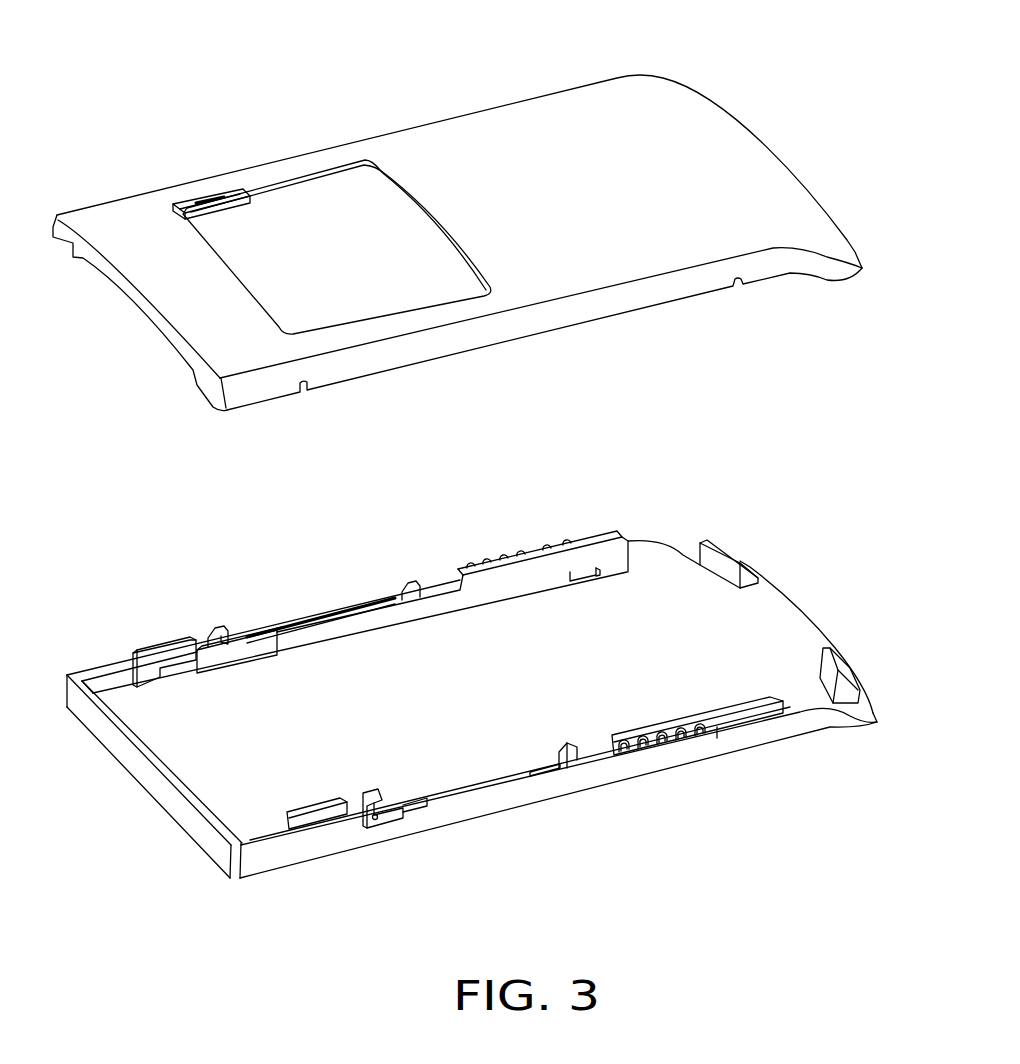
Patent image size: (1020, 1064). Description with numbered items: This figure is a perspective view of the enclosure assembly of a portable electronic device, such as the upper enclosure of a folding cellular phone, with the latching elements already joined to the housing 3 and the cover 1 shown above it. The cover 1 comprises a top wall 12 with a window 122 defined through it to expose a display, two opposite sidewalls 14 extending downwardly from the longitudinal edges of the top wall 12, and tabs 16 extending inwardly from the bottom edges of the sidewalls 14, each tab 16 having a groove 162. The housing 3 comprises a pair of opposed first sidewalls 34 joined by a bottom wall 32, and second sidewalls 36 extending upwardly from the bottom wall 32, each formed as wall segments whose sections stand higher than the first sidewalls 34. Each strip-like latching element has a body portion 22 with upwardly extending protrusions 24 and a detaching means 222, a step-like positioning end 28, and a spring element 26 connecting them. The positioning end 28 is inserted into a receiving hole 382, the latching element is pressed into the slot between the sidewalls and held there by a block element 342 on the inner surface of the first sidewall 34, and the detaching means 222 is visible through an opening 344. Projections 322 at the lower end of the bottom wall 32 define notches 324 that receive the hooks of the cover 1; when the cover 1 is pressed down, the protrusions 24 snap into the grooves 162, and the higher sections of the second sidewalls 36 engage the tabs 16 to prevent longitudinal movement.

The cover 1 is at (457, 217).
The top wall 12 is at (442, 147).
The window 122 is at (348, 183).
The sidewalls 14 is at (777, 263).
The tabs 16 is at (236, 195).
The groove 162 is at (207, 198).
The housing 3 is at (462, 718).
The bottom wall 32 is at (460, 750).
The first sidewalls 34 is at (113, 680).
The block element 342 is at (350, 607).
The opening 344 is at (397, 830).
The body portion 22 is at (293, 638).
The detaching means 222 is at (377, 822).
The protrusions 24 is at (567, 760).
The spring element 26 is at (713, 730).
The positioning end 28 is at (578, 582).
The second sidewalls 36 is at (594, 560).
The receiving hole 382 is at (596, 574).
The projections 322 is at (718, 560).
The notch 324 is at (845, 680).